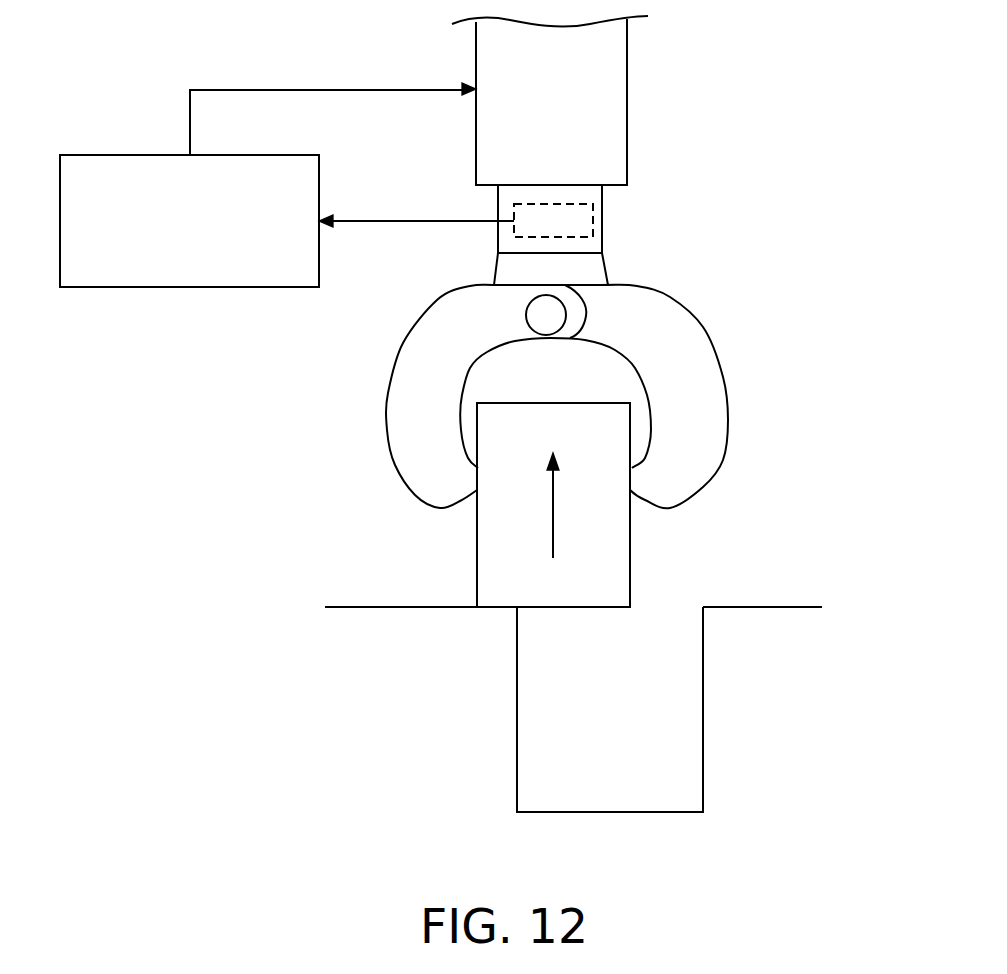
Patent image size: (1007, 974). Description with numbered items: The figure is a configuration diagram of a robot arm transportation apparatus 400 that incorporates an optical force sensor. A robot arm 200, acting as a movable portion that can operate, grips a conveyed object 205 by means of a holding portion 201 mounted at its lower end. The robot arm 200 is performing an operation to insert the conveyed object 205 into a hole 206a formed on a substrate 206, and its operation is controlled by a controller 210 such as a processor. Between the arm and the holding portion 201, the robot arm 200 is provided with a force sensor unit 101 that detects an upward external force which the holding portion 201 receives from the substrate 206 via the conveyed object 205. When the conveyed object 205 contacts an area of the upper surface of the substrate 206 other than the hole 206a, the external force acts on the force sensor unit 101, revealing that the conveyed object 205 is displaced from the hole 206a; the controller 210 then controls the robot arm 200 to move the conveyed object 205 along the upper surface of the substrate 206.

The robot arm transportation apparatus 400 is at (855, 93).
The controller 210 is at (88, 287).
The robot arm 200 is at (622, 106).
The force sensor unit 101 is at (593, 220).
The holding portion 201 is at (708, 425).
The conveyed object 205 is at (608, 560).
The substrate 206 is at (350, 607).
The hole 206a is at (703, 746).